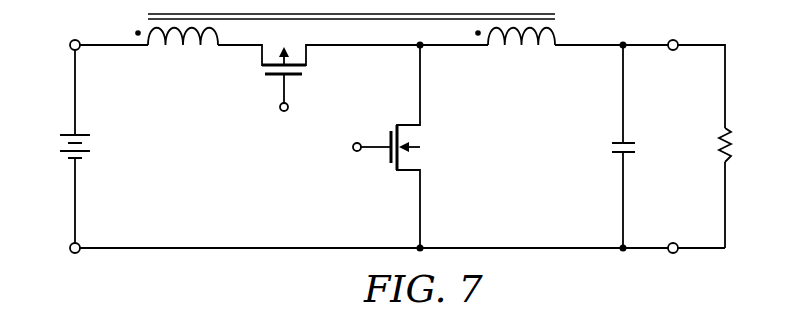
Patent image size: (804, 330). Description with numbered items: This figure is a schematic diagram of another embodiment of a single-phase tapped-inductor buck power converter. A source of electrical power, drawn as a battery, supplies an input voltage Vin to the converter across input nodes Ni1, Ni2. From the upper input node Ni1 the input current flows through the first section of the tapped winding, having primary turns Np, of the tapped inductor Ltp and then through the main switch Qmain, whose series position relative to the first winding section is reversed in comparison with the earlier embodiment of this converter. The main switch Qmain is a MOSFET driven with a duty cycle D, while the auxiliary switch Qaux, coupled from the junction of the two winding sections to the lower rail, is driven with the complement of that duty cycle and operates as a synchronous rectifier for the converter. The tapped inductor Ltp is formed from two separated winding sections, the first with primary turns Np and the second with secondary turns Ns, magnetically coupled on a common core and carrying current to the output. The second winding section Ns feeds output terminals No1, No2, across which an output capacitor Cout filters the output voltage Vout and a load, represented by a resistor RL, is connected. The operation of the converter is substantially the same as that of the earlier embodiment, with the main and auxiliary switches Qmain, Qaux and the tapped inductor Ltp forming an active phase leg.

The input node Ni1 is at (75, 29).
The input node Ni2 is at (74, 265).
The input voltage Vin is at (57, 147).
The primary turns Np is at (176, 51).
The secondary turns Ns is at (515, 50).
The tapped inductor Ltp is at (453, 63).
The main switch Qmain is at (314, 77).
The duty cycle D is at (284, 121).
The auxiliary switch Qaux is at (390, 147).
The output capacitor Cout is at (600, 147).
The resistor RL is at (710, 144).
The output voltage Vout is at (750, 146).
The output terminal No1 is at (672, 29).
The output terminal No2 is at (671, 232).